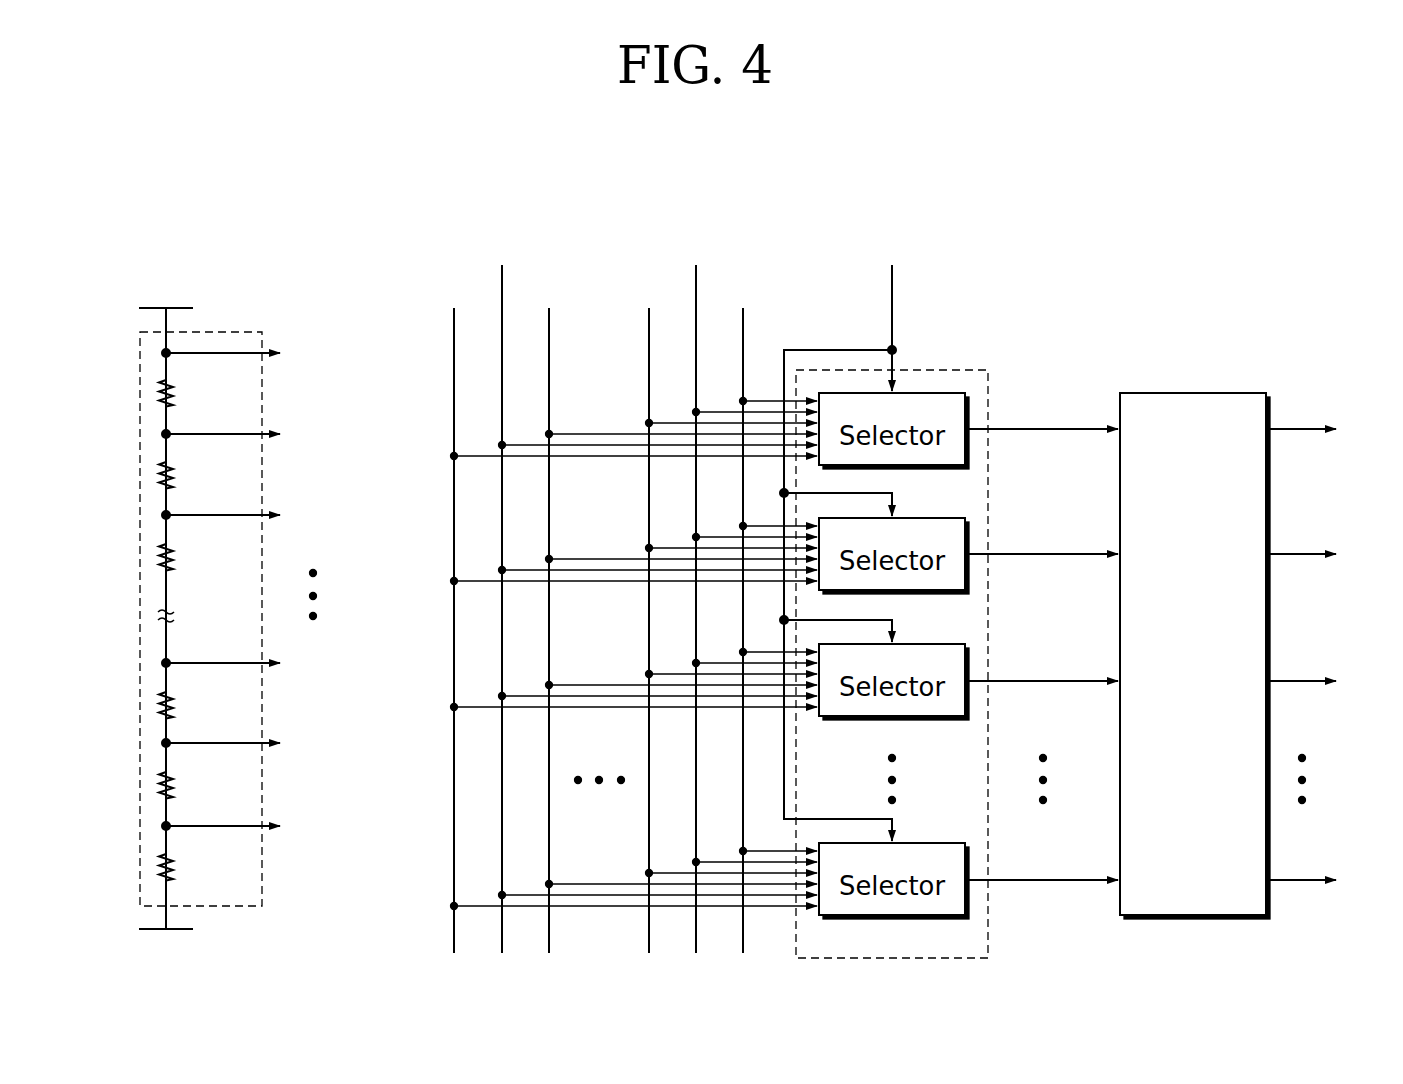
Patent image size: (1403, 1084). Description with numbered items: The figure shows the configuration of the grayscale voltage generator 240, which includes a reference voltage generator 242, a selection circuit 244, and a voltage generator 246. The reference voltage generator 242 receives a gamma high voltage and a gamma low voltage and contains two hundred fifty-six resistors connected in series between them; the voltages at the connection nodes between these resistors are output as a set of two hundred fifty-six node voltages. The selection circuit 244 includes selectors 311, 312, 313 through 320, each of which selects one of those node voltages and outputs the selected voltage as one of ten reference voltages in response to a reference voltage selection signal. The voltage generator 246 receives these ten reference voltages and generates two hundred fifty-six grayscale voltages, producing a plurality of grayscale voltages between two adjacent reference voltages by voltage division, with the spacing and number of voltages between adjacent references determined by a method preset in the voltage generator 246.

The grayscale voltage generator 240 is at (1156, 236).
The reference voltage generator 242 is at (222, 332).
The selection circuit 244 is at (948, 370).
The voltage generator 246 is at (1224, 393).
The selector 311 is at (872, 469).
The selector 312 is at (872, 595).
The selector 313 is at (872, 720).
The selector 320 is at (872, 919).